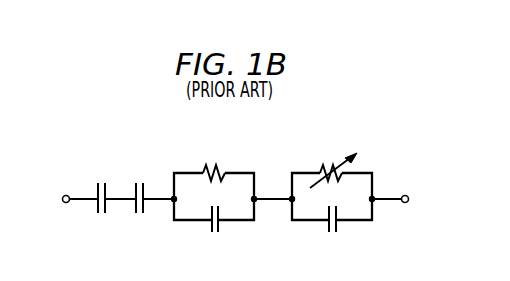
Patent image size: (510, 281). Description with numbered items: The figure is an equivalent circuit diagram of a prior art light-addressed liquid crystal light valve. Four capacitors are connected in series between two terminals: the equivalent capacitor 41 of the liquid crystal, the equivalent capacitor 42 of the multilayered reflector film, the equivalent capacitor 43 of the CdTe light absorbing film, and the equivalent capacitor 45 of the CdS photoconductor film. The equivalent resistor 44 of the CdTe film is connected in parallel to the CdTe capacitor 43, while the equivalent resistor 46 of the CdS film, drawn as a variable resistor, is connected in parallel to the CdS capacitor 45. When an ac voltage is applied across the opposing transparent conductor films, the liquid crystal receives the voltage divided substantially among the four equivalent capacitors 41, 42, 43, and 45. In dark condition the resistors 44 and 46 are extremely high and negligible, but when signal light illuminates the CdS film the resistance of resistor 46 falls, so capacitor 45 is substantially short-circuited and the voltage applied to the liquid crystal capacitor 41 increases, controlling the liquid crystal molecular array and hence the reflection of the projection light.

The equivalent capacitor of the liquid crystal 41 is at (102, 215).
The equivalent capacitor of the multilayered reflector film 42 is at (140, 215).
The equivalent capacitor of the CdTe film 43 is at (213, 234).
The equivalent resistor of the CdTe film 44 is at (214, 167).
The equivalent capacitor of the CdS film 45 is at (332, 234).
The equivalent resistor of the CdS film 46 is at (328, 168).